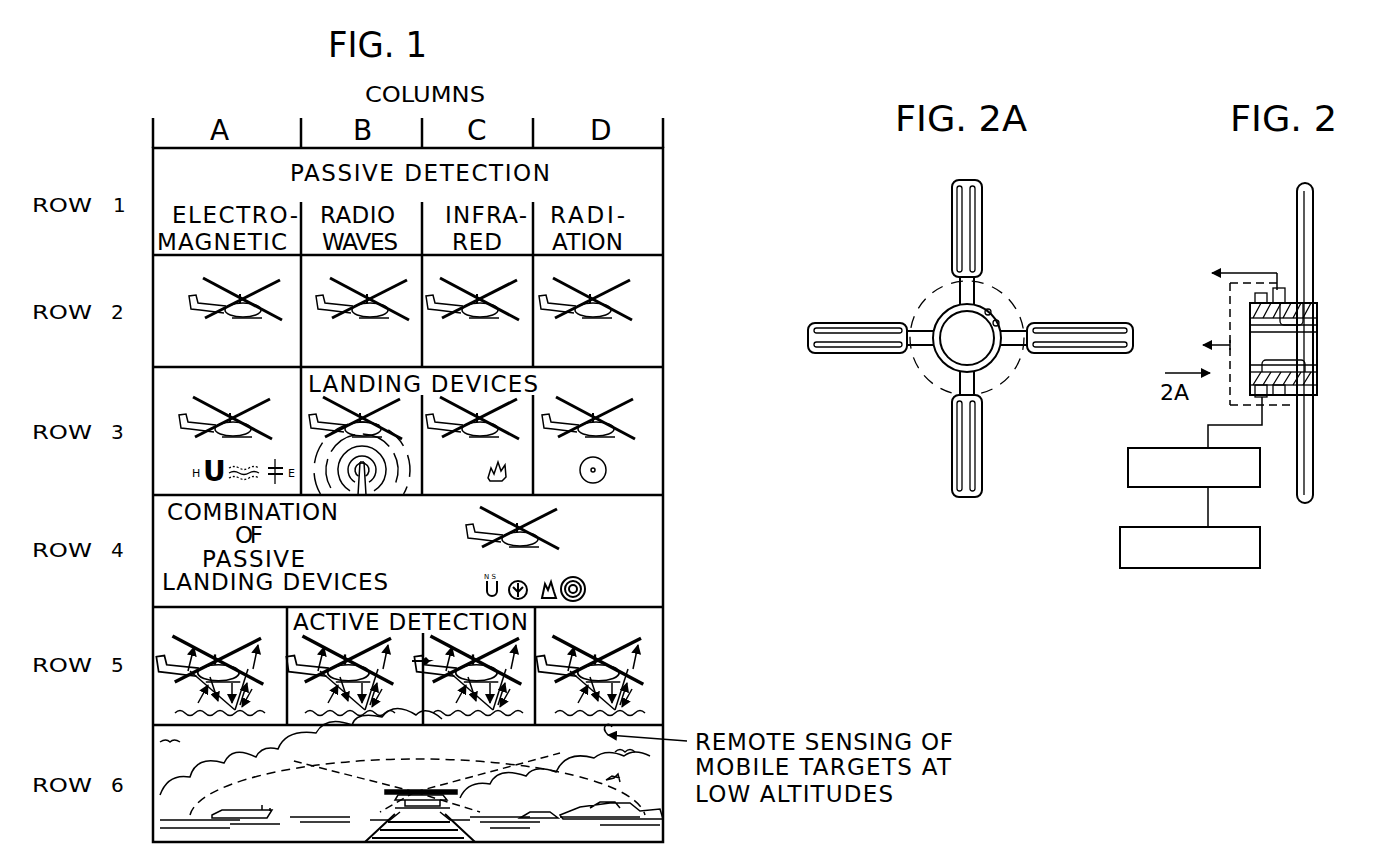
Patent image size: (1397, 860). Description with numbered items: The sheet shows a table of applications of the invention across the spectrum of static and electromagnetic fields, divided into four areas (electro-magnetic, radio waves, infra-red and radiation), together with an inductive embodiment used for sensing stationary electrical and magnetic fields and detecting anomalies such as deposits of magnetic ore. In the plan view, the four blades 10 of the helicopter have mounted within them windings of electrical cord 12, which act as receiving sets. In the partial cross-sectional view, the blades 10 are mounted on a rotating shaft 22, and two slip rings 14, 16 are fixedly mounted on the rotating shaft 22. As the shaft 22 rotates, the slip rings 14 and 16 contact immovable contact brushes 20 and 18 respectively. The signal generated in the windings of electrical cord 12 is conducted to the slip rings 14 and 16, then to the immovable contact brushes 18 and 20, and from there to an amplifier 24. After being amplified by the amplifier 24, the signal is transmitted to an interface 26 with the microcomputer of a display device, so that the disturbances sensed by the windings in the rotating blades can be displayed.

In FIG. 2A, the blades 10 is at (962, 337).
In FIG. 2, the blades 10 is at (1336, 333).
In FIG. 2A, the windings of electrical cord 12 is at (980, 232).
In FIG. 2, the windings of electrical cord 12 is at (1300, 229).
In FIG. 2, the slip ring 14 is at (1257, 297).
In FIG. 2, the slip ring 16 is at (1300, 312).
In FIG. 2, the contact brush 18 is at (1284, 297).
In FIG. 2, the contact brush 20 is at (1268, 395).
In FIG. 2, the rotating shaft 22 is at (1311, 348).
In FIG. 2, the amplifier 24 is at (1128, 462).
In FIG. 2, the interface 26 is at (1120, 545).